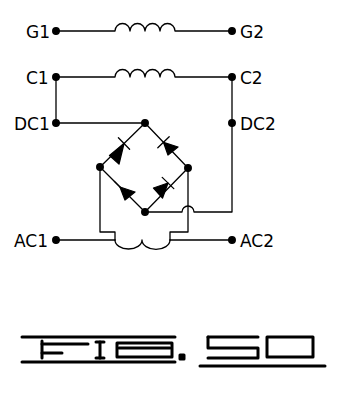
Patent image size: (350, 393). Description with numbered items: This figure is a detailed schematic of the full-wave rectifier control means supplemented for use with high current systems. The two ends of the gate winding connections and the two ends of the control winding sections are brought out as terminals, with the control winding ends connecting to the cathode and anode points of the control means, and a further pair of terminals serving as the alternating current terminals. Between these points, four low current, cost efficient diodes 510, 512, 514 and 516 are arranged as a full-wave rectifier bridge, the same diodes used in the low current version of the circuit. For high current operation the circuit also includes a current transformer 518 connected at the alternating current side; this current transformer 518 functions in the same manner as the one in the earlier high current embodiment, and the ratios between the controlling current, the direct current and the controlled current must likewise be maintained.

The diode 510 is at (110, 141).
The diode 512 is at (167, 138).
The diode 514 is at (173, 187).
The diode 516 is at (118, 197).
The current transformer 518 is at (145, 248).